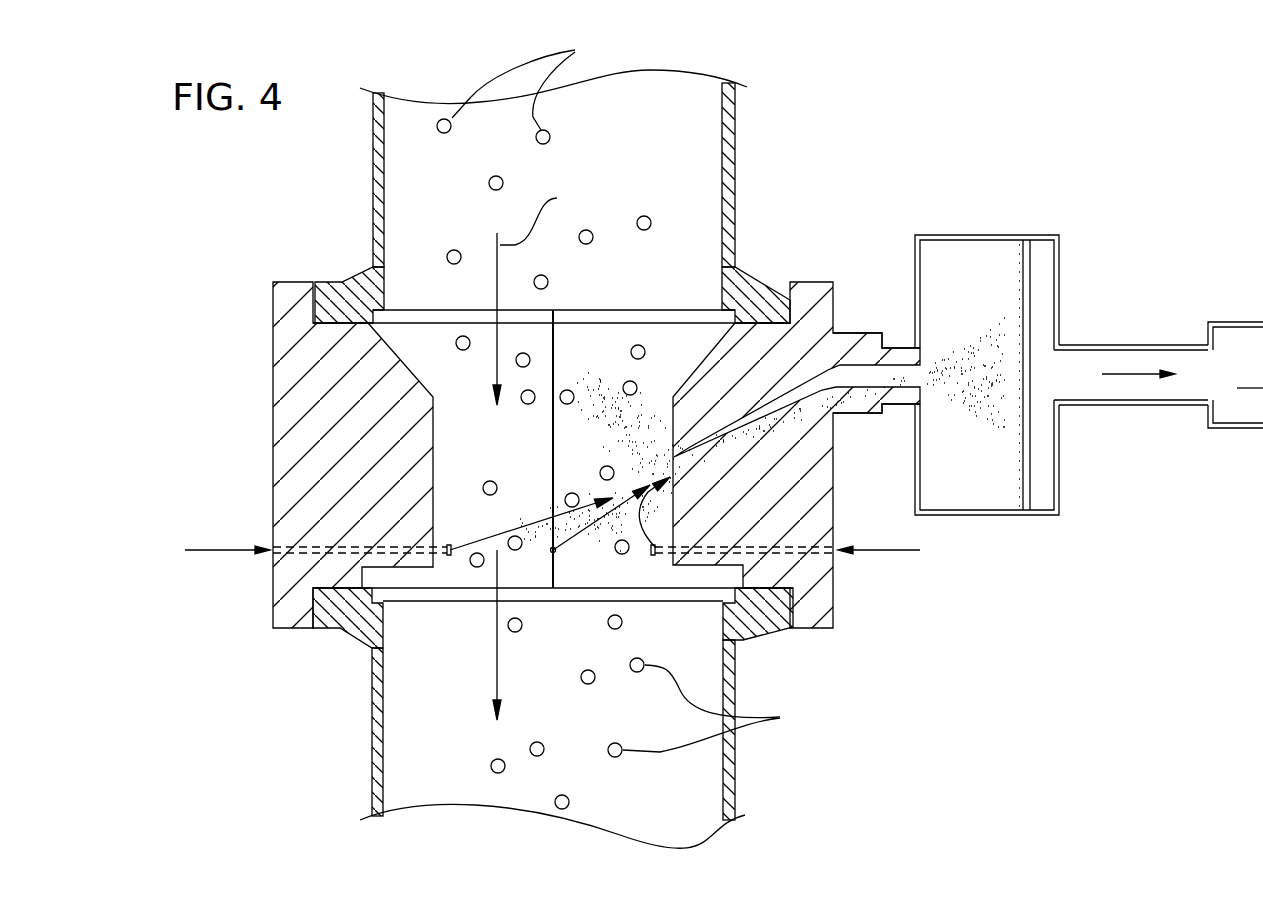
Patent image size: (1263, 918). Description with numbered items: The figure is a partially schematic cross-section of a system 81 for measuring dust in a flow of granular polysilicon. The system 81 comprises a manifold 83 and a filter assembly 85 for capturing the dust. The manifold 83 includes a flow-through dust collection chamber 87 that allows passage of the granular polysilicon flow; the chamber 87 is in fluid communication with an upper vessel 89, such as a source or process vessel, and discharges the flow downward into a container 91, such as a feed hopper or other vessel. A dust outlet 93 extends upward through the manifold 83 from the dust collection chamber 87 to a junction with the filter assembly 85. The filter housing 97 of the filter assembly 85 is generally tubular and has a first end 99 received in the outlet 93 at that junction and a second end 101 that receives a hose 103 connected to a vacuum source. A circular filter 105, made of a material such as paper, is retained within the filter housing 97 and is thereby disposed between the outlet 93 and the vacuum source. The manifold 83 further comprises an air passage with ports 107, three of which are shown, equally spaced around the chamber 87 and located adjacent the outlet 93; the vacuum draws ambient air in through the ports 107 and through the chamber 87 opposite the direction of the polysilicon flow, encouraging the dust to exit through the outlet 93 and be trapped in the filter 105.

The system for measuring dust 81 is at (945, 115).
The manifold 83 is at (248, 438).
The filter assembly 85 is at (978, 530).
The dust collection chamber 87 is at (549, 458).
The upper vessel 89 is at (736, 165).
The container 91 is at (735, 788).
The dust outlet 93 is at (759, 405).
The filter housing 97 is at (972, 236).
The first end 99 is at (905, 346).
The second end 101 is at (1085, 346).
The hose 103 is at (1120, 405).
The filter 105 is at (1028, 262).
The ports 107 is at (553, 550).